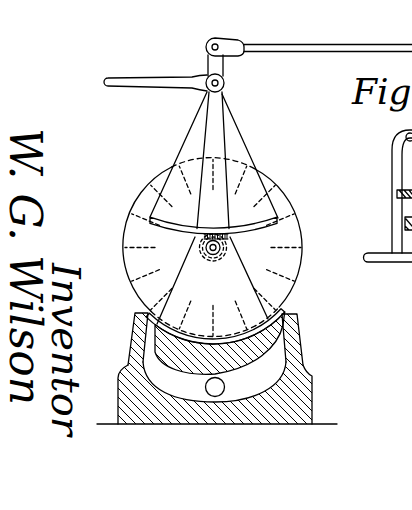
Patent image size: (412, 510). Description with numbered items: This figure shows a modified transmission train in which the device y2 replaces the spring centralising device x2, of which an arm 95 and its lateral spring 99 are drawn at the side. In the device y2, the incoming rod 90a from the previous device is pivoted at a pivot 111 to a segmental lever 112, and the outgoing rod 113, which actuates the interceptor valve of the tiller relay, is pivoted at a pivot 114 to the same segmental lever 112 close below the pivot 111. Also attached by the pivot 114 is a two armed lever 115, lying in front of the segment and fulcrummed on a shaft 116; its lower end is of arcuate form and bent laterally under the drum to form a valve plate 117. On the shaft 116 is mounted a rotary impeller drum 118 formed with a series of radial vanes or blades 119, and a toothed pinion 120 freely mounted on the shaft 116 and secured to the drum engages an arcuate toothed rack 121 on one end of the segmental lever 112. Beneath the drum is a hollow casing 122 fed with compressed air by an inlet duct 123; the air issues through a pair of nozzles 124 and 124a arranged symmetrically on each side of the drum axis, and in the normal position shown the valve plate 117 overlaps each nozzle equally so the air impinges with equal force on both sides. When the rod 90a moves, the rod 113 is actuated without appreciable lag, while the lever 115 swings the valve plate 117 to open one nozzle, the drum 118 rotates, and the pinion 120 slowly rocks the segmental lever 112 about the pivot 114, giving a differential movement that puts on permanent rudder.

The pivot 111 is at (218, 42).
The outgoing rod of device y1 90a is at (335, 45).
The outgoing rod 113 is at (144, 79).
The pivot 114 is at (225, 83).
The two armed lever 115 is at (212, 124).
The segmental lever 112 is at (252, 164).
The shaft 116 is at (227, 248).
The valve plate 117 is at (290, 316).
The rotary impeller drum 118 is at (300, 227).
The radial vanes or blades 119 is at (288, 206).
The toothed pinion 120 is at (217, 257).
The arcuate toothed rack 121 is at (156, 228).
The hollow casing 122 is at (304, 397).
The inlet duct 123 is at (224, 388).
The nozzle 124 is at (148, 342).
The nozzle 124a is at (294, 343).
The arm 95 is at (392, 222).
The lateral spring 99 is at (398, 189).
The device y2 is at (276, 108).
The spring centralising device x2 is at (370, 205).